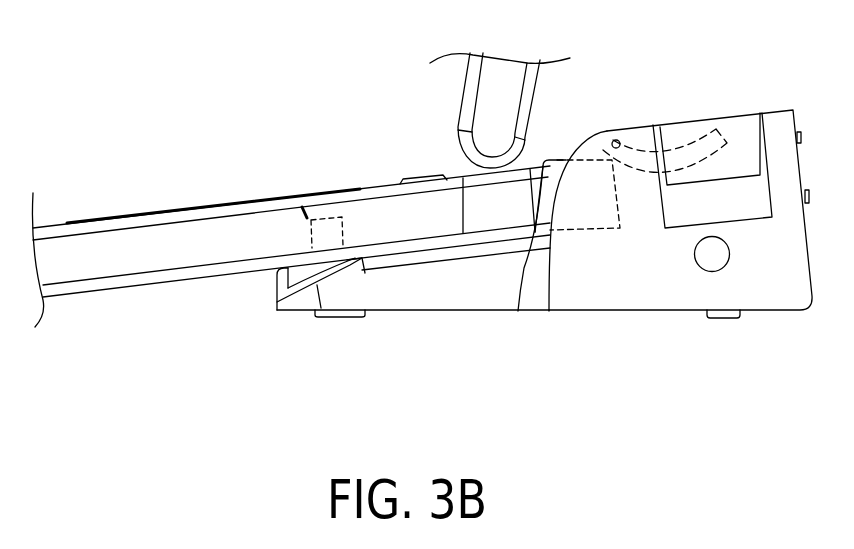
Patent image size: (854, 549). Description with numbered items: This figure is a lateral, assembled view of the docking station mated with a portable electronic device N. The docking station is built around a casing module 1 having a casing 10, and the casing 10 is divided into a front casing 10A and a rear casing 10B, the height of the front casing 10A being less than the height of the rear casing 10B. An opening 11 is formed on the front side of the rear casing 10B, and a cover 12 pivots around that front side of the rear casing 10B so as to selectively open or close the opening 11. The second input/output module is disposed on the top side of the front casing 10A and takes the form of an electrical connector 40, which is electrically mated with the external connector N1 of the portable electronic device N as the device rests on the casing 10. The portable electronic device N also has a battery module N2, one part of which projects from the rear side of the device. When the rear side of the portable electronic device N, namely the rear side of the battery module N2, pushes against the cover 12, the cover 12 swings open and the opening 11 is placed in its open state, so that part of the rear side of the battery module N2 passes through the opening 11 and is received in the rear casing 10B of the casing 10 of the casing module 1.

The casing module 1 is at (775, 131).
The casing 10 is at (622, 377).
The front casing 10A is at (490, 268).
The rear casing 10B is at (622, 268).
The opening 11 is at (553, 160).
The cover 12 is at (685, 150).
The electrical connector 40 is at (332, 217).
The portable electronic device N is at (137, 240).
The external connector N1 is at (302, 207).
The battery module N2 is at (587, 180).